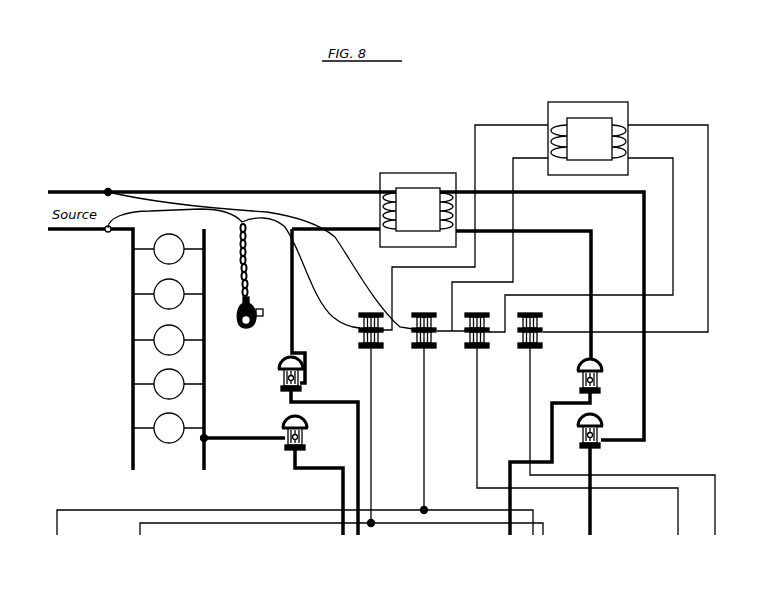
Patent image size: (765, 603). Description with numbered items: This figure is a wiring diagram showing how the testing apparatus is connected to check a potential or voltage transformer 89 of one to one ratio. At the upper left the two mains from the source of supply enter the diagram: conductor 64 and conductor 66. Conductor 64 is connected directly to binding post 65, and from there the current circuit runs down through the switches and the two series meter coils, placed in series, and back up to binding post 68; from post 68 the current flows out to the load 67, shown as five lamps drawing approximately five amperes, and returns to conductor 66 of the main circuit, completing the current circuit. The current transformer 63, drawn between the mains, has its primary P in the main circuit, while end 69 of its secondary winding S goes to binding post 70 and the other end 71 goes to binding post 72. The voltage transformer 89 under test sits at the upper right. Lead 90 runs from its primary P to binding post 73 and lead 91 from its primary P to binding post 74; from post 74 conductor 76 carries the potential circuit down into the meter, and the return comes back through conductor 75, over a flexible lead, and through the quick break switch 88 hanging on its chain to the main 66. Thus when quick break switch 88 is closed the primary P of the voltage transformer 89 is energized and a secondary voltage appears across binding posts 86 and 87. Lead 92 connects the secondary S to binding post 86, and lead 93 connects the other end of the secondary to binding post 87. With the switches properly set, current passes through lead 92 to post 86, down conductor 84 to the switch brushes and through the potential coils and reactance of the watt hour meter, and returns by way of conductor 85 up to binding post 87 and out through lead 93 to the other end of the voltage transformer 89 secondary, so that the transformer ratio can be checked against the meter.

The current transformer 63 is at (417, 201).
The conductor 64 is at (230, 250).
The binding post 65 is at (318, 446).
The conductor 66 is at (204, 339).
The load 67 is at (168, 349).
The binding post 68 is at (272, 475).
The end of secondary winding 69 is at (542, 307).
The binding post 70 is at (599, 474).
The end of secondary winding 71 is at (441, 299).
The binding post 72 is at (565, 447).
The binding post 73 is at (371, 322).
The binding post 74 is at (424, 322).
The conductor 75 is at (379, 437).
The conductor 76 is at (432, 431).
The conductor 84 is at (577, 441).
The conductor 85 is at (622, 441).
The binding post 86 is at (477, 322).
The binding post 87 is at (530, 322).
The quick break switch 88 is at (253, 281).
The voltage transformer 89 is at (588, 138).
The lead 90 is at (465, 227).
The lead 91 is at (492, 244).
The lead 92 is at (581, 245).
The lead 93 is at (625, 228).